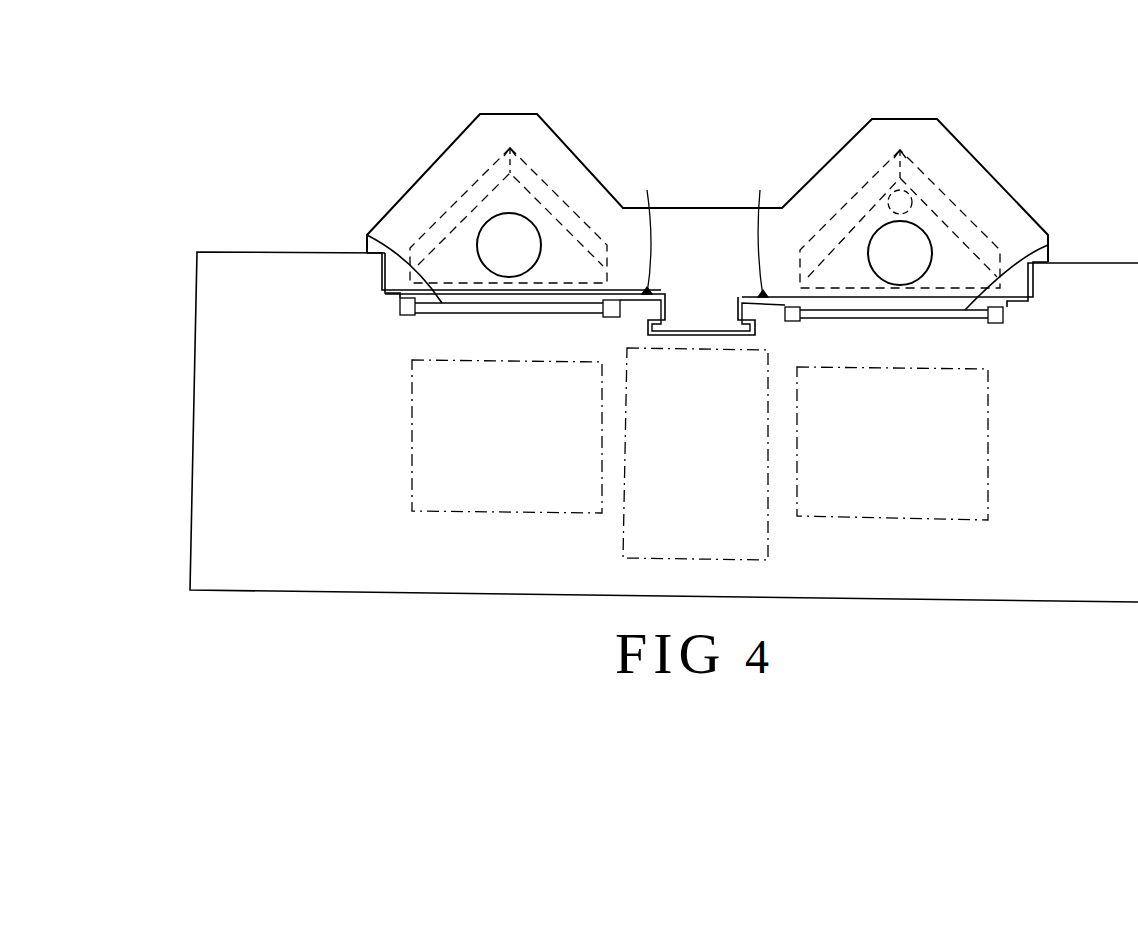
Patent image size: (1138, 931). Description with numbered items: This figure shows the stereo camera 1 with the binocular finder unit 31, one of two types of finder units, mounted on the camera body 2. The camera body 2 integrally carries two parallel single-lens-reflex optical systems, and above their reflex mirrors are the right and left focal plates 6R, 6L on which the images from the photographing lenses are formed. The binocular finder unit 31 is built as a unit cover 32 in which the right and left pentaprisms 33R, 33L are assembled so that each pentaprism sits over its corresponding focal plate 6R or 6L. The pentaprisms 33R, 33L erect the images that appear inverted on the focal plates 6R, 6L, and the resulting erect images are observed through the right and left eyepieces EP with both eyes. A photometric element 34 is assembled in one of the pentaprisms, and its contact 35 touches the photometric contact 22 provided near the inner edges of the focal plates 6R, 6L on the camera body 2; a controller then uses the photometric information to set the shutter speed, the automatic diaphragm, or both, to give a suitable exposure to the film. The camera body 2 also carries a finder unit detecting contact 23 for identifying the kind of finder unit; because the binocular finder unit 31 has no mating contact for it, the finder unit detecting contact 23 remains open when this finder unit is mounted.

The stereo camera 1 is at (672, 127).
The camera body 2 is at (239, 252).
The photometric contact 22 is at (570, 248).
The finder unit detecting contact 23 is at (647, 228).
The binocular finder unit 31 is at (683, 208).
The unit cover 32 is at (510, 114).
The pentaprism 33L is at (474, 184).
The pentaprism 33R is at (947, 182).
The photometric element 34 is at (888, 195).
The contact 35 is at (758, 229).
The focal plate 6L is at (367, 236).
The focal plate 6R is at (1048, 245).
The eyepiece EP is at (488, 243).